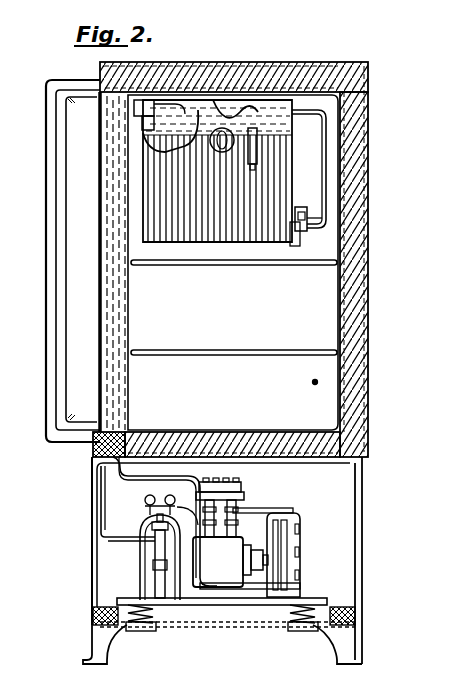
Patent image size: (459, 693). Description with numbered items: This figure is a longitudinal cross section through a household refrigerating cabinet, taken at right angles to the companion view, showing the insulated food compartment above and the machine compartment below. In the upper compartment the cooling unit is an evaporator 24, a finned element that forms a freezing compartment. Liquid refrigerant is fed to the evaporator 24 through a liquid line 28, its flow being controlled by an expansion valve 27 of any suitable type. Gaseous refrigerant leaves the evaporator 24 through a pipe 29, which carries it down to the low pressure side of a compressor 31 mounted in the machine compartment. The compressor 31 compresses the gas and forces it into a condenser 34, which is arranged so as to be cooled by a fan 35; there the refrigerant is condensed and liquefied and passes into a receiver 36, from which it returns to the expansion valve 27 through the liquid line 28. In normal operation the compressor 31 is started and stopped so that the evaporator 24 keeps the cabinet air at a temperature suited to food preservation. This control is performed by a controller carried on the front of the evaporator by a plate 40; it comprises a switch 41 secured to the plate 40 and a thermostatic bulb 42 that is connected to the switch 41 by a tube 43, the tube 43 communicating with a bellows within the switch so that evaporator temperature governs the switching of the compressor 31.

The evaporator 24 is at (204, 245).
The expansion valve 27 is at (322, 208).
The liquid line 28 is at (325, 155).
The pipe 29 is at (298, 110).
The compressor 31 is at (220, 577).
The condenser 34 is at (270, 520).
The fan 35 is at (284, 545).
The receiver 36 is at (171, 580).
The plate 40 is at (143, 133).
The switch 41 is at (148, 110).
The thermostatic bulb 42 is at (252, 130).
The tube 43 is at (214, 100).